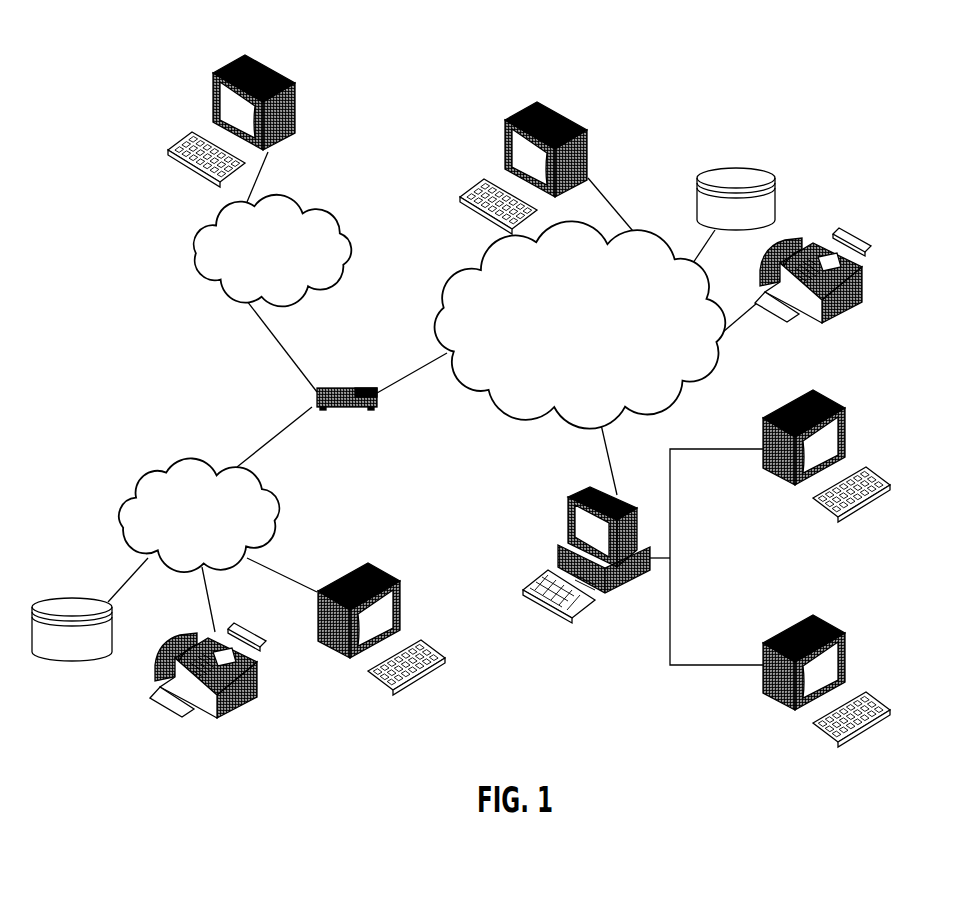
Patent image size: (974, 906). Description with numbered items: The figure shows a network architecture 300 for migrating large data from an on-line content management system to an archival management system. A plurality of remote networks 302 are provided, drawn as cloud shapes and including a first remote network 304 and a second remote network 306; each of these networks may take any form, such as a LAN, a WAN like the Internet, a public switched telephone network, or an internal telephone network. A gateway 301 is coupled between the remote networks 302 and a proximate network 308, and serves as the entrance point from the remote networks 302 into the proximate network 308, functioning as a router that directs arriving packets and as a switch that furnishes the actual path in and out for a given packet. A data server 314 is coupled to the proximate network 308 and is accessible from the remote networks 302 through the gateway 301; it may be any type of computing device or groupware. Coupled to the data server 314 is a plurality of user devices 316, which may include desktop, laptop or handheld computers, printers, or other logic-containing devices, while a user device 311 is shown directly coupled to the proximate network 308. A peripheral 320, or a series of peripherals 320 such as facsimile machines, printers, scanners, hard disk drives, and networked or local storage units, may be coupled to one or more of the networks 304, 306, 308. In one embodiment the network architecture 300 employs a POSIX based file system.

The network architecture 300 is at (892, 86).
The gateway 301 is at (347, 386).
The remote networks 302 is at (172, 330).
The first remote network 304 is at (127, 493).
The second remote network 306 is at (344, 258).
The proximate network 308 is at (693, 382).
The user device 311 is at (590, 158).
The data server 314 is at (568, 520).
The user devices 316 is at (298, 110).
The peripheral 320 is at (735, 168).